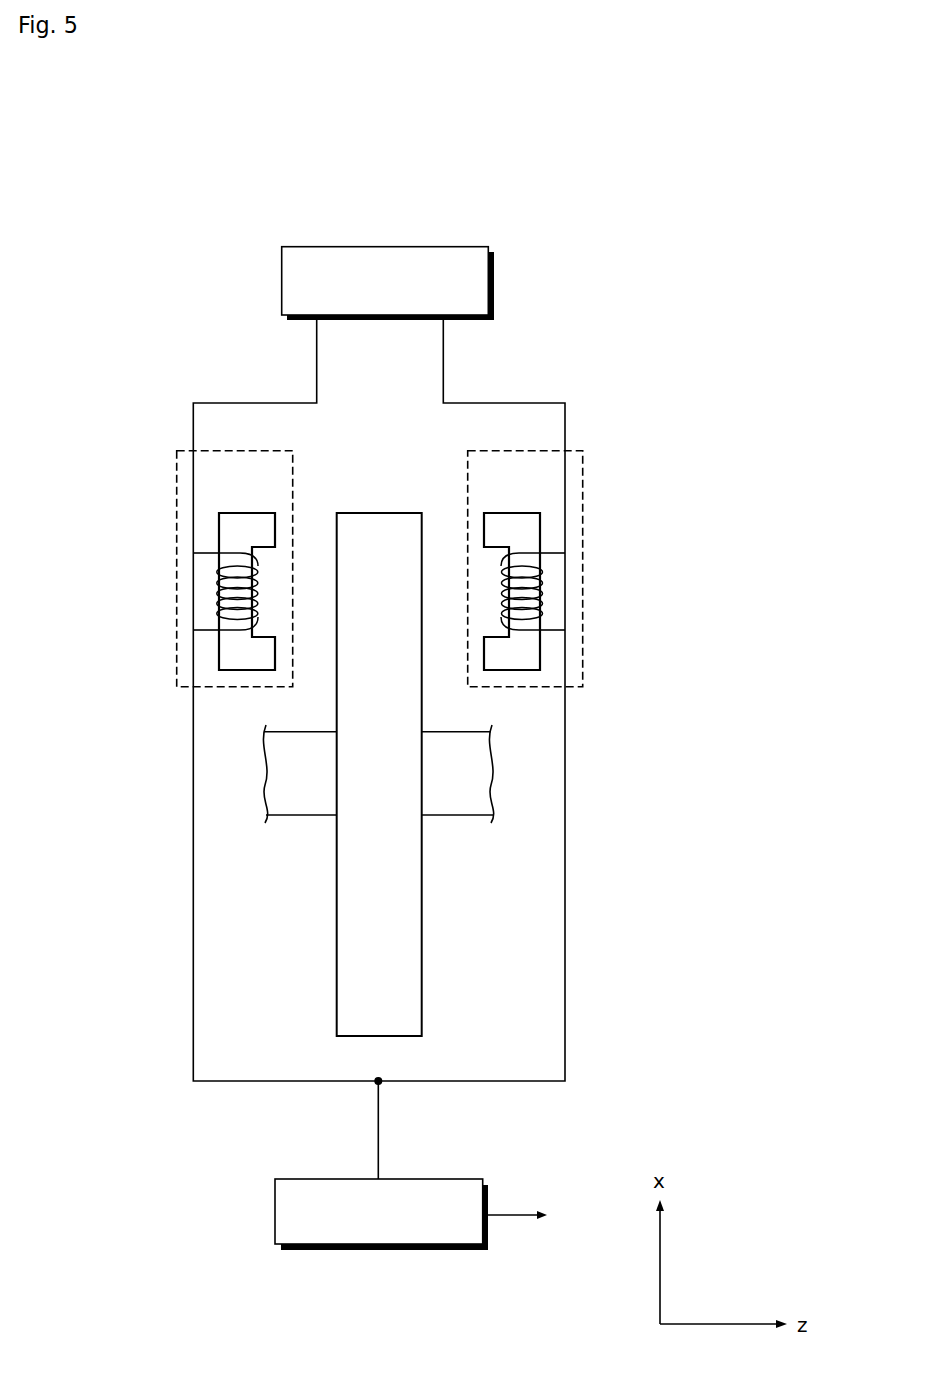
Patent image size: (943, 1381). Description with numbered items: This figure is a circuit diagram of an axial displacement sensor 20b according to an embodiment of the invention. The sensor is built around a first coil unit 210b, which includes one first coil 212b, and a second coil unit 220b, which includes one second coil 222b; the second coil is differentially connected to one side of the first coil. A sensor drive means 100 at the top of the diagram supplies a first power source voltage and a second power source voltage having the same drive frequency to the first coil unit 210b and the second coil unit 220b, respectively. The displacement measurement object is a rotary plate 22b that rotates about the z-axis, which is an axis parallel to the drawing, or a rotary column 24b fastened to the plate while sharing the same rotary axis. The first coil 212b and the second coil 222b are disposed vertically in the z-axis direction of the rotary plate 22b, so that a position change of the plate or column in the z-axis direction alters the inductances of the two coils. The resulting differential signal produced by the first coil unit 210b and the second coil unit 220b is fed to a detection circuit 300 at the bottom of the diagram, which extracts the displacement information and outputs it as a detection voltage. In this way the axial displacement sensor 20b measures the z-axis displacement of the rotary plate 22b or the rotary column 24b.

The axial displacement sensor 20b is at (404, 93).
The sensor drive means 100 is at (384, 247).
The first coil unit 210b is at (177, 465).
The first coil 212b is at (250, 513).
The second coil unit 220b is at (583, 465).
The second coil 222b is at (515, 513).
The rotary plate 22b is at (418, 998).
The rotary column 24b is at (451, 808).
The detection circuit 300 is at (457, 1179).